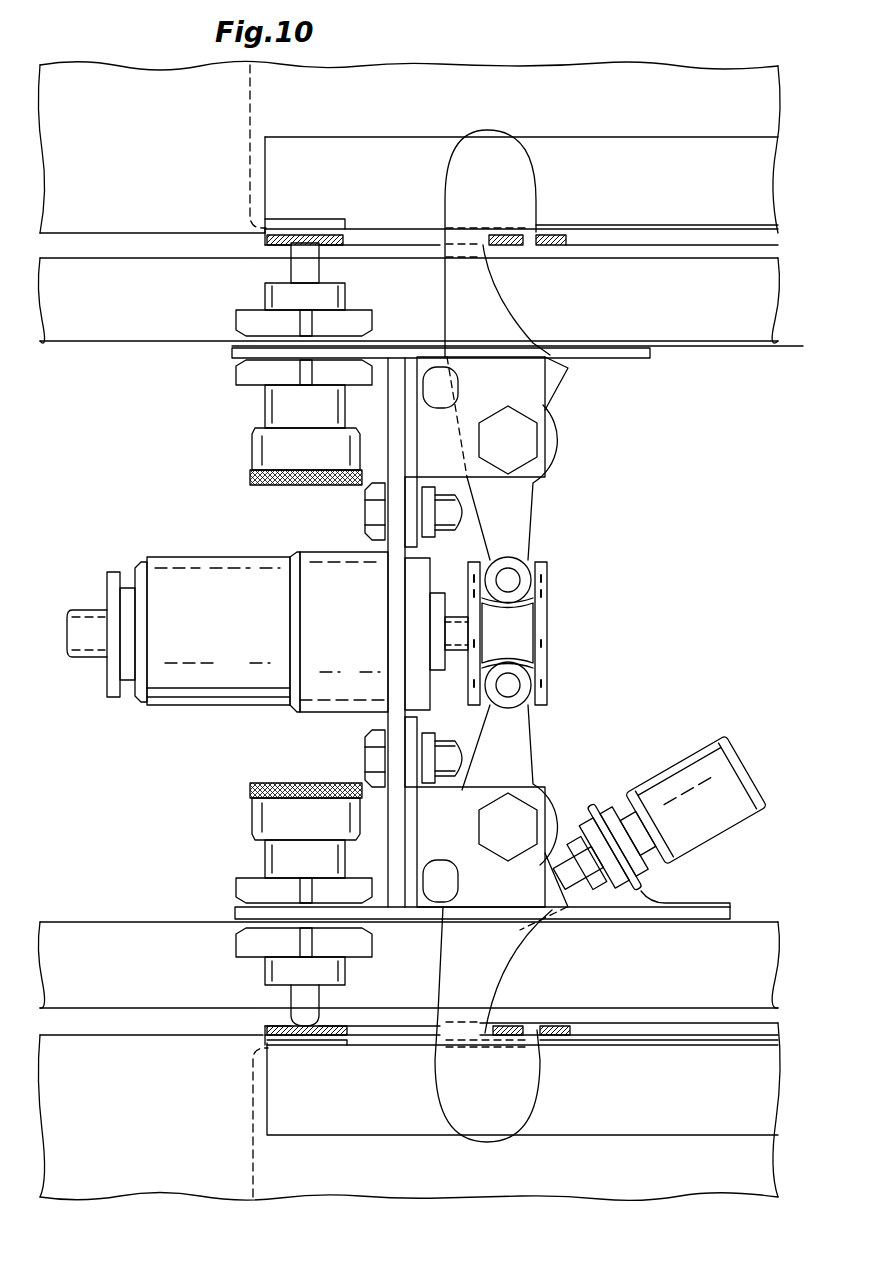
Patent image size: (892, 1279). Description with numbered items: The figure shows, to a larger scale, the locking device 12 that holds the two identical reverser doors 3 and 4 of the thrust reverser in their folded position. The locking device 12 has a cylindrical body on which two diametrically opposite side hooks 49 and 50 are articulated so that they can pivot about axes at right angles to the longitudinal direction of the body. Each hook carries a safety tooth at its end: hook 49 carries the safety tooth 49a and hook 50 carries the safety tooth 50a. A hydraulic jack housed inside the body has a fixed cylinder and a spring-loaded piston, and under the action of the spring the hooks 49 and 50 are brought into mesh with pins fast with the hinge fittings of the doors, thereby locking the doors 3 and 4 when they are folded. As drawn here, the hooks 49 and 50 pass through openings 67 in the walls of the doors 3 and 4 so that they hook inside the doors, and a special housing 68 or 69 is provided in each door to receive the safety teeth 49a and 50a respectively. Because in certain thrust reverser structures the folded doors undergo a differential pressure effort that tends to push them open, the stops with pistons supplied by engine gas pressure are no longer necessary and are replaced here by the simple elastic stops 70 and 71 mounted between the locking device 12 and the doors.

The reverser door 3 is at (700, 1180).
The reverser door 4 is at (586, 90).
The locking device 12 is at (187, 703).
The side hook 49 is at (523, 762).
The safety tooth 49a is at (530, 1027).
The side hook 50 is at (532, 487).
The safety tooth 50a is at (529, 243).
The opening 67 is at (392, 1045).
The special housing 68 is at (538, 1037).
The special housing 69 is at (538, 227).
The elastic stop 70 is at (277, 818).
The elastic stop 71 is at (268, 410).